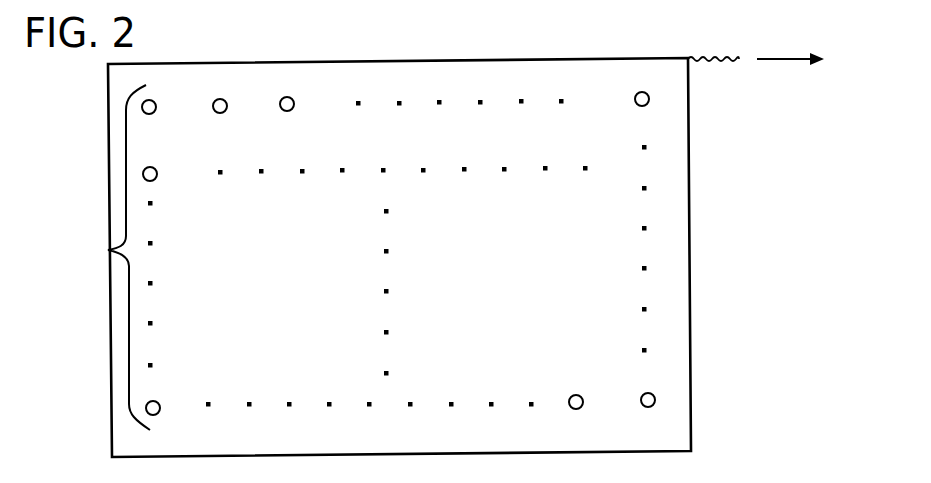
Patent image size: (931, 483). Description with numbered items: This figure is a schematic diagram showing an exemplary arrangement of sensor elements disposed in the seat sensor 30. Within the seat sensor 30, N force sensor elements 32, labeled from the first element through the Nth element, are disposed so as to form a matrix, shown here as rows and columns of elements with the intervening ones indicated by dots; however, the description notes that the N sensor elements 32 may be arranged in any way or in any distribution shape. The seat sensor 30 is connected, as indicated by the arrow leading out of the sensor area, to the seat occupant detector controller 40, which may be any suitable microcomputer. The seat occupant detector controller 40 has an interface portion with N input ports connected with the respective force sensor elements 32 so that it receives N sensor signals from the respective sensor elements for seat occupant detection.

The seat sensor 30 is at (110, 168).
The force sensor elements 32 is at (113, 252).
The seat occupant detector controller 40 is at (764, 119).